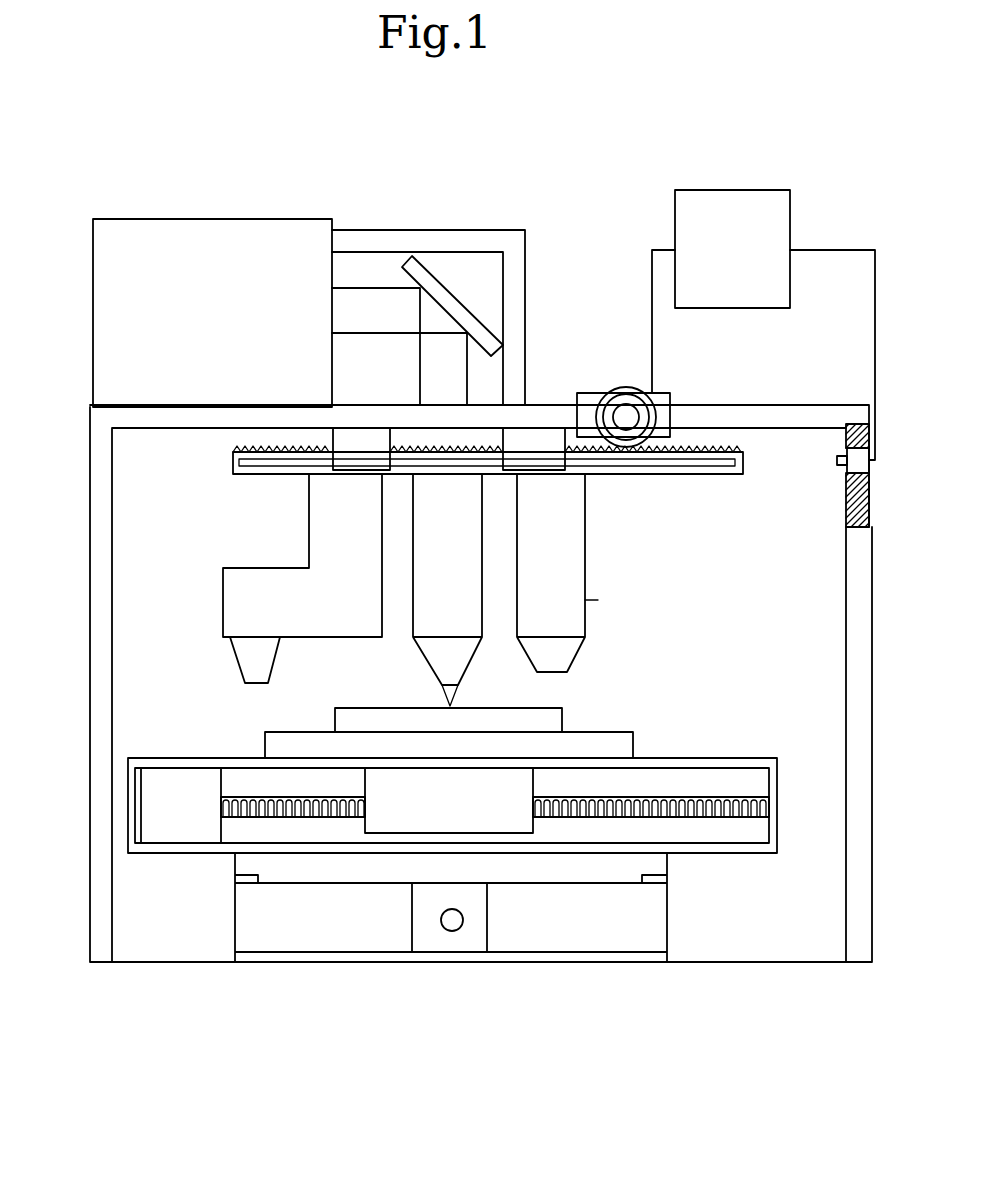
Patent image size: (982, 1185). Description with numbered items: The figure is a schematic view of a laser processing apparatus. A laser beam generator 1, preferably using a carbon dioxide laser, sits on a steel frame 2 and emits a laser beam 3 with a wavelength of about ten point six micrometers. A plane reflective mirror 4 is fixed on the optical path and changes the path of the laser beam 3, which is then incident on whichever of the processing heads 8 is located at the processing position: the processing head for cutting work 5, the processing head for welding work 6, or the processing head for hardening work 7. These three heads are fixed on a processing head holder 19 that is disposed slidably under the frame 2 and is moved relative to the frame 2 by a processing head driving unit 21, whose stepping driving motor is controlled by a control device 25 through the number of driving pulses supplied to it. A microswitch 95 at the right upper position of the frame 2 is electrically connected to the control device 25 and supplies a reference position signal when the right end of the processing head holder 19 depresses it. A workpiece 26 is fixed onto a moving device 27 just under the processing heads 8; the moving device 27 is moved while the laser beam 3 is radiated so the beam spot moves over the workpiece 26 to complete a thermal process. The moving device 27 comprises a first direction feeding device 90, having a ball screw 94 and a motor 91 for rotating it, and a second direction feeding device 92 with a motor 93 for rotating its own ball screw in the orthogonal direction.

The laser beam generator 1 is at (282, 219).
The frame 2 is at (90, 665).
The laser beam 3 is at (377, 288).
The plane reflective mirror 4 is at (455, 300).
The processing head for cutting work 5 is at (432, 663).
The processing head for welding work 6 is at (223, 598).
The processing head for hardening work 7 is at (585, 572).
The processing heads 8 is at (606, 602).
The processing head holder 19 is at (252, 477).
The processing head driving unit 21 is at (678, 375).
The control device 25 is at (721, 190).
The workpiece 26 is at (562, 722).
The moving device 27 is at (645, 746).
The first direction feeding device 90 is at (167, 757).
The motor 91 is at (176, 843).
The second direction feeding device 92 is at (320, 962).
The motor 93 is at (460, 950).
The ball screw 94 is at (700, 818).
The microswitch 95 is at (846, 466).